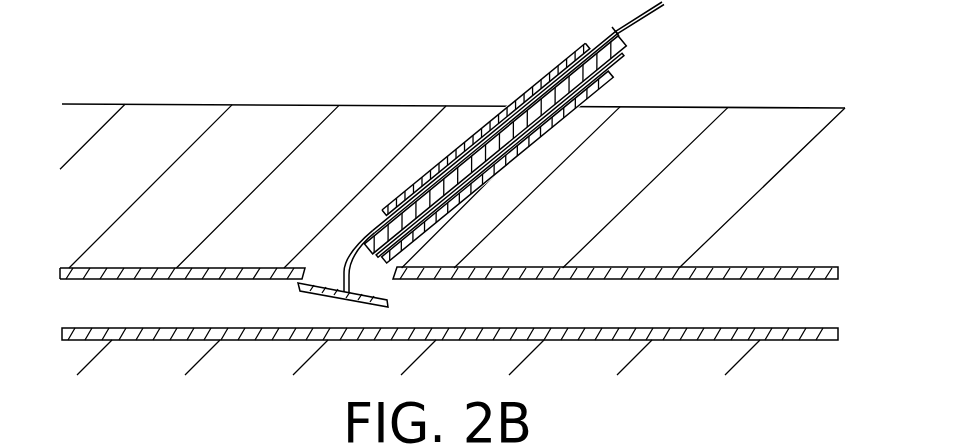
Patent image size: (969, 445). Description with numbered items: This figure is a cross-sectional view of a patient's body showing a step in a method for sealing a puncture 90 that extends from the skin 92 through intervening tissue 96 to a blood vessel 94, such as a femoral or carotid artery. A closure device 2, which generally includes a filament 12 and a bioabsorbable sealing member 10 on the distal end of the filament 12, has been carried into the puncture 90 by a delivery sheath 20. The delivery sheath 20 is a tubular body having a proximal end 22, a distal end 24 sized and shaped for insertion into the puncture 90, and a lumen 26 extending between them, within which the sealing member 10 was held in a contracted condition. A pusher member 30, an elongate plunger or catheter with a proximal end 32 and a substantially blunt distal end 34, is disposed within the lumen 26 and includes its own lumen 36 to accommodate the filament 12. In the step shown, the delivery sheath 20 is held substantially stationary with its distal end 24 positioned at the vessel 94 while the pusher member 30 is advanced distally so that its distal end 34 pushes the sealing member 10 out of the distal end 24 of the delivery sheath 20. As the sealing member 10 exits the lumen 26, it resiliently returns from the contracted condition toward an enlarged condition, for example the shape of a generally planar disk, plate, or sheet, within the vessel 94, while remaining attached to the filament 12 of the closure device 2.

The closure device 2 is at (625, 30).
The sealing member 10 is at (333, 302).
The filament 12 is at (647, 20).
The delivery sheath 20 is at (547, 62).
The proximal end 22 is at (615, 80).
The distal end 24 is at (383, 217).
The lumen 26 is at (408, 185).
The pusher member 30 is at (602, 38).
The proximal end 32 is at (627, 50).
The distal end 34 is at (378, 260).
The lumen 36 is at (493, 182).
The puncture 90 is at (507, 110).
The skin 92 is at (775, 108).
The blood vessel 94 is at (797, 330).
The tissue 96 is at (728, 170).